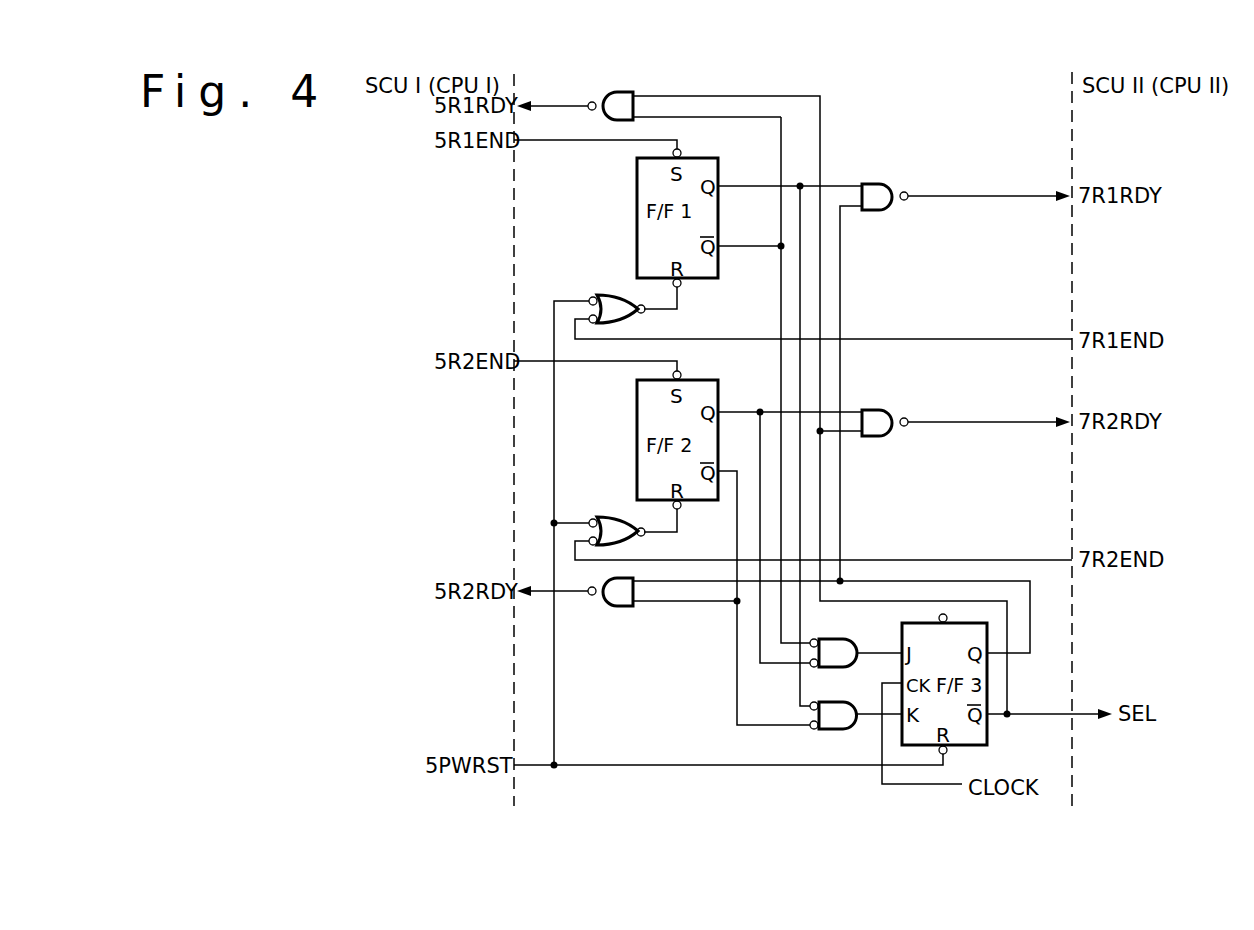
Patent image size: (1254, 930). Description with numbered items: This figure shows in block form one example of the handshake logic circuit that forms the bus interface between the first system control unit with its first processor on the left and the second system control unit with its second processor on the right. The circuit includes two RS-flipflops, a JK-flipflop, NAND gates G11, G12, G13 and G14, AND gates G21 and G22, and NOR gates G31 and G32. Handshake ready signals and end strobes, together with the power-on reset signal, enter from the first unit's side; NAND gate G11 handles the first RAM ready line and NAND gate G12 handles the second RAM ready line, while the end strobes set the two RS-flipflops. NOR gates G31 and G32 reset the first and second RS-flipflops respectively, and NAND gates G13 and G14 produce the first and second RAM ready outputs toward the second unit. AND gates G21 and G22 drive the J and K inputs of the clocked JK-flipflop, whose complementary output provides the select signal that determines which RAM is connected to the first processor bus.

The NAND gate G11 is at (634, 94).
The NAND gate G12 is at (600, 607).
The NAND gate G13 is at (888, 184).
The NAND gate G14 is at (888, 410).
The AND gate G21 is at (876, 630).
The AND gate G22 is at (834, 731).
The NOR gate G31 is at (610, 295).
The NOR gate G32 is at (610, 517).